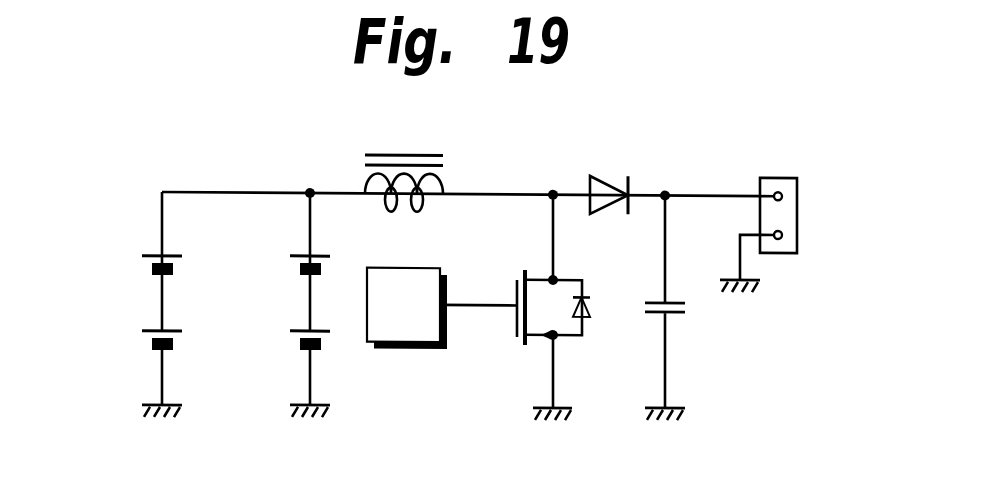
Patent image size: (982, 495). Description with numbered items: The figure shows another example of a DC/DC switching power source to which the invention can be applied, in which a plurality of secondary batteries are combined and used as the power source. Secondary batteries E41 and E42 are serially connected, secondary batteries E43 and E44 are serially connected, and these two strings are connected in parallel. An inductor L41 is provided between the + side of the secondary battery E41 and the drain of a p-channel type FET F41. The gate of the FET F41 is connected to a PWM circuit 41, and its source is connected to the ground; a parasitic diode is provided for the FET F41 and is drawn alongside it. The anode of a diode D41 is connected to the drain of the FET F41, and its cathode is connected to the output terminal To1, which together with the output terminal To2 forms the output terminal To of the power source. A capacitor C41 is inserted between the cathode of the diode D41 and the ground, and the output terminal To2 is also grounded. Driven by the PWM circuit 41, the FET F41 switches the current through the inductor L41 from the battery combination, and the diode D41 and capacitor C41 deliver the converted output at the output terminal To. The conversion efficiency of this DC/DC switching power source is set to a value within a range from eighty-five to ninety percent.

The secondary battery E41 is at (139, 267).
The secondary battery E42 is at (139, 342).
The secondary battery E43 is at (288, 266).
The secondary battery E44 is at (288, 341).
The inductor L41 is at (365, 176).
The PWM circuit 41 is at (402, 268).
The p-channel type FET F41 is at (522, 345).
The diode D41 is at (610, 176).
The capacitor C41 is at (685, 308).
The output terminal To is at (778, 176).
The output terminal To1 is at (782, 196).
The output terminal To2 is at (782, 234).